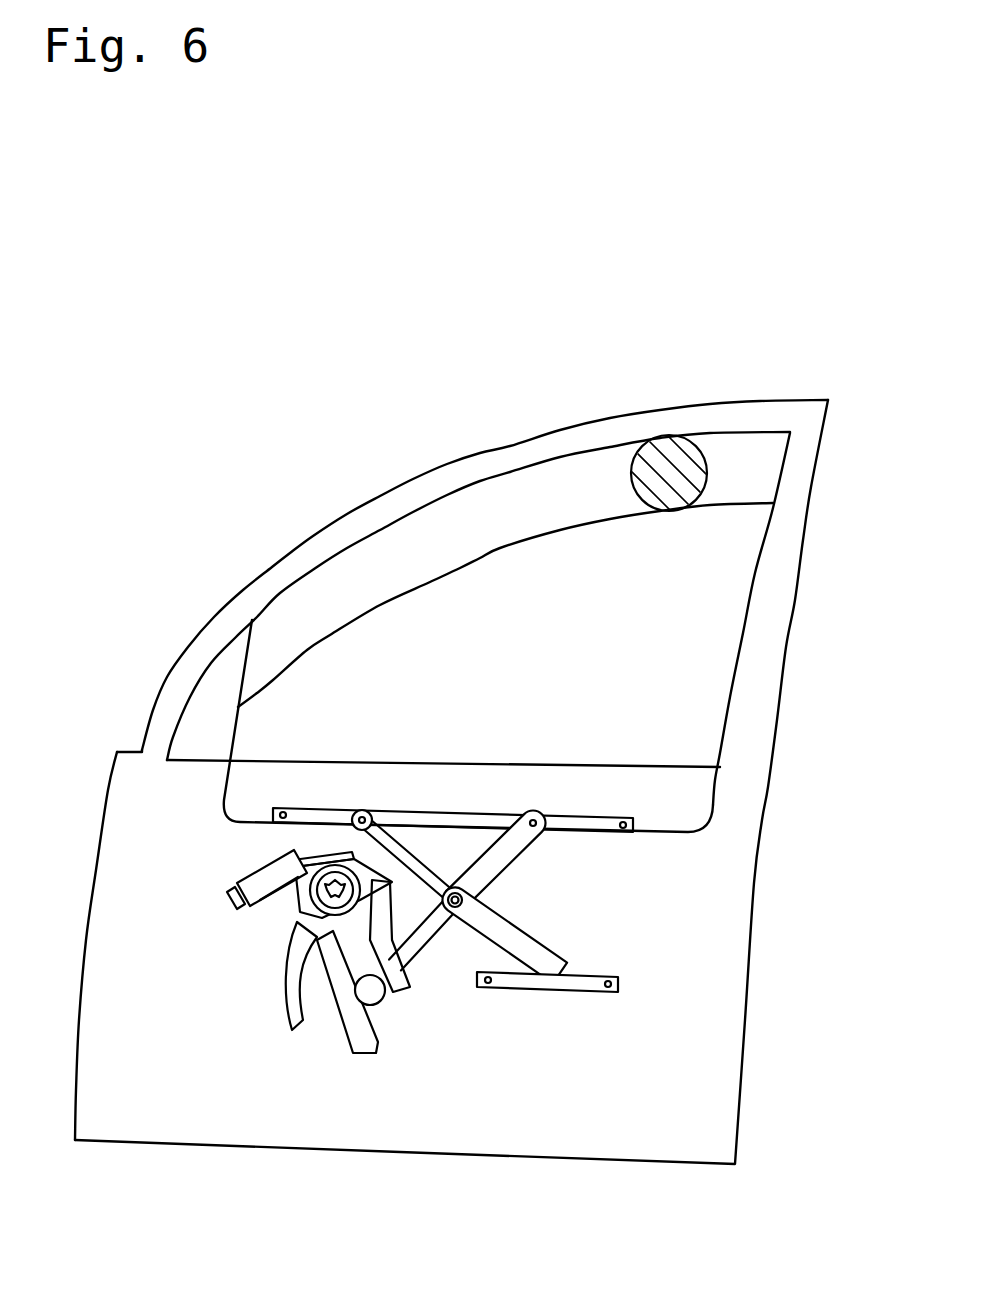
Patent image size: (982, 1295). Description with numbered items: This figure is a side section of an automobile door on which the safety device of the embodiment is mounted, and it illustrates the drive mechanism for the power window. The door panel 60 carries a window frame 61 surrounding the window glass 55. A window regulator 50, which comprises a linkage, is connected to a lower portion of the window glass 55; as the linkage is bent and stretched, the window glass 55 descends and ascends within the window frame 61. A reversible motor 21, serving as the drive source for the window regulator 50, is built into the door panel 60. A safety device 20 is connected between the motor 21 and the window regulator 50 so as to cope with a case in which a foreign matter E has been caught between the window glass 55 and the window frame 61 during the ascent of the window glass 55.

The door panel 60 is at (290, 547).
The window frame 61 is at (558, 457).
The foreign matter E is at (677, 463).
The window glass 55 is at (710, 633).
The window regulator 50 is at (494, 894).
The safety device 20 is at (300, 920).
The reversible motor 21 is at (260, 877).